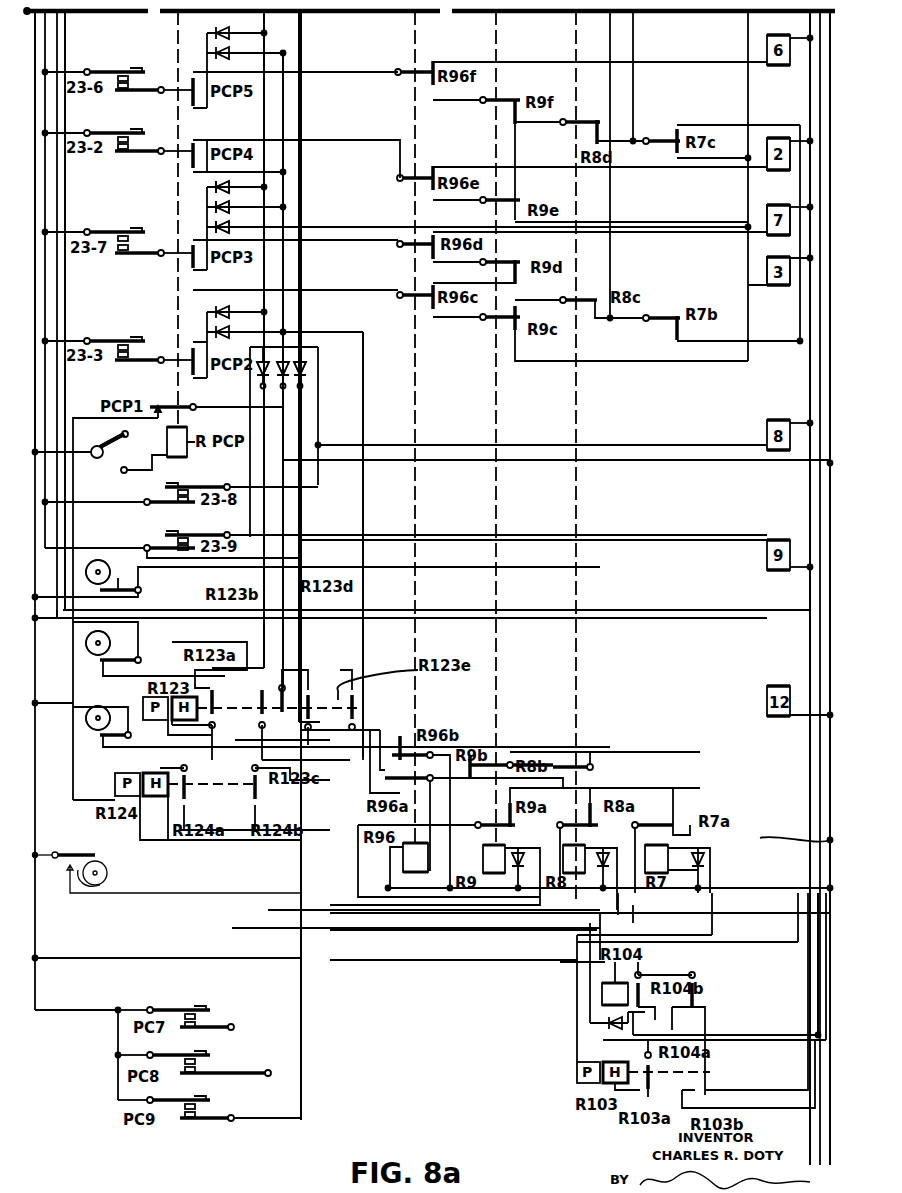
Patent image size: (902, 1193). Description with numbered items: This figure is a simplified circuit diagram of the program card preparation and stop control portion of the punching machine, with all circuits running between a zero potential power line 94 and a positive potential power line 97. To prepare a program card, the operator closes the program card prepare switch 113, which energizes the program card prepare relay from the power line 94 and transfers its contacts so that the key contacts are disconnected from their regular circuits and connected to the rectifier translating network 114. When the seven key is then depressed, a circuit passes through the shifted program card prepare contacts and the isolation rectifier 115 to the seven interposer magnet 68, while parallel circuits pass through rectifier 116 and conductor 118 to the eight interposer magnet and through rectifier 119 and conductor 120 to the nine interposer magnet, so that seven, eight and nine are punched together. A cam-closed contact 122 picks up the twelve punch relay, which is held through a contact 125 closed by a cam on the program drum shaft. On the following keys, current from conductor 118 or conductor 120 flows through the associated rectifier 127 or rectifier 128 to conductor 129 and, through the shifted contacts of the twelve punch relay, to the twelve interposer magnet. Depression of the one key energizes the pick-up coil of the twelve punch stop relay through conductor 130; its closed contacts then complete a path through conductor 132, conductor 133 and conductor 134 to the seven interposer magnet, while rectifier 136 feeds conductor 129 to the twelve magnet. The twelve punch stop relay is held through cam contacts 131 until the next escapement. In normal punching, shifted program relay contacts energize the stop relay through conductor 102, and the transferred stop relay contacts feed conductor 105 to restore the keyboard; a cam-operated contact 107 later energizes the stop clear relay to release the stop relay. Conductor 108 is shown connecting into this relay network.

The zero potential power line 94 is at (36, 318).
The conductor 130 is at (65, 405).
The program card prepare switch 113 is at (108, 452).
The conductor 118 is at (283, 115).
The rectifier translating network 114 is at (316, 203).
The rectifier 119 is at (216, 187).
The rectifier 116 is at (240, 202).
The isolation rectifier 115 is at (240, 222).
The conductor 120 is at (268, 288).
The conductor 134 is at (301, 290).
The rectifier 127 is at (262, 386).
The rectifier 128 is at (283, 390).
The rectifier 136 is at (300, 386).
The conductor 133 is at (363, 407).
The conductor 129 is at (264, 530).
The contact 122 is at (122, 585).
The cam contacts 131 is at (98, 665).
The conductor 132 is at (299, 617).
The contact 125 is at (98, 740).
The contact 107 is at (167, 872).
The conductor 108 is at (748, 320).
The conductor 102 is at (806, 400).
The interposer magnet 68 is at (783, 140).
The positive potential power line 97 is at (828, 840).
The conductor 105 is at (818, 972).